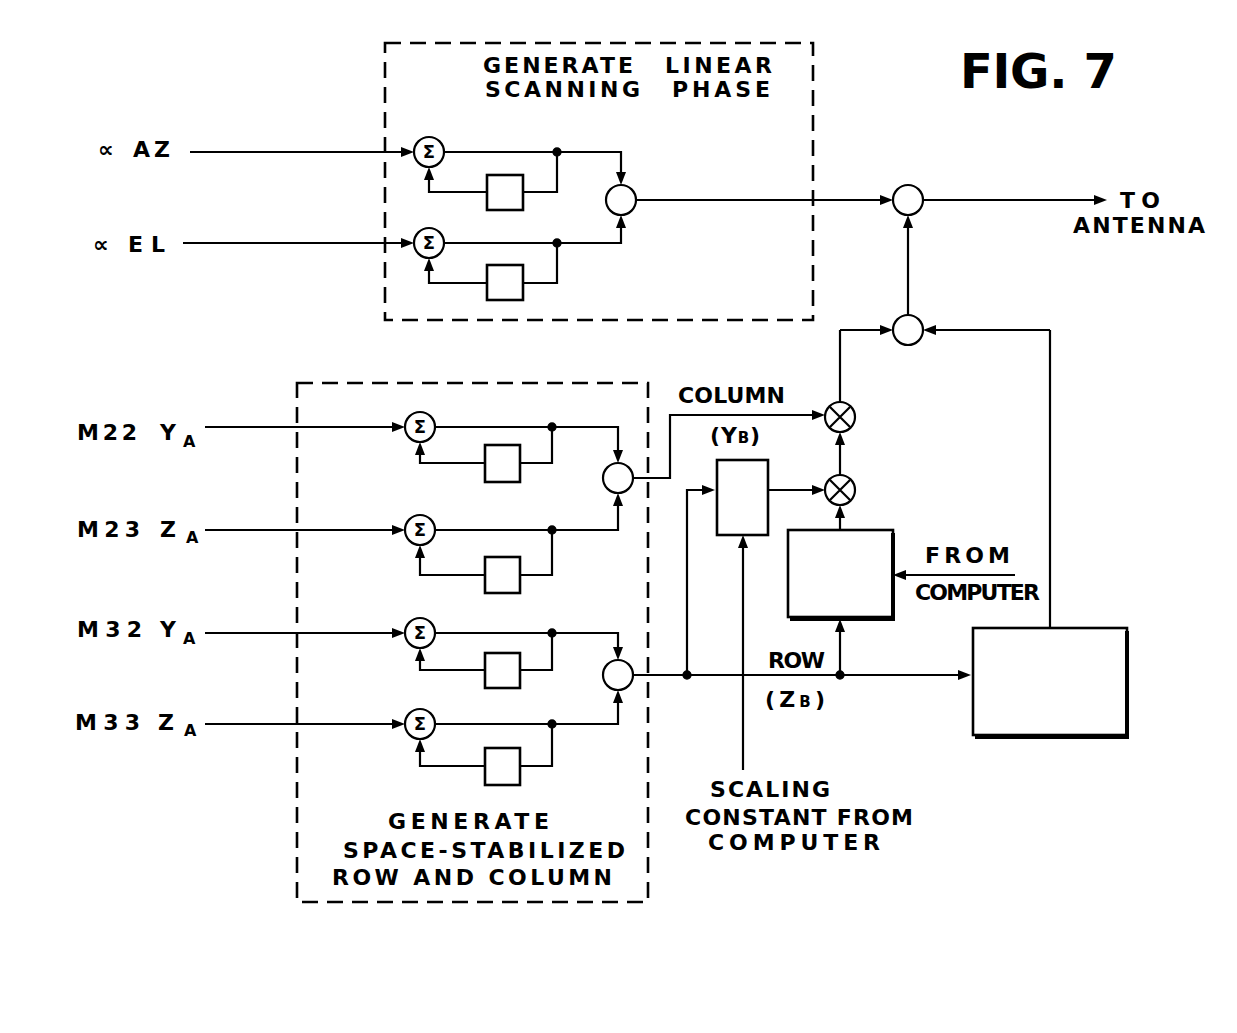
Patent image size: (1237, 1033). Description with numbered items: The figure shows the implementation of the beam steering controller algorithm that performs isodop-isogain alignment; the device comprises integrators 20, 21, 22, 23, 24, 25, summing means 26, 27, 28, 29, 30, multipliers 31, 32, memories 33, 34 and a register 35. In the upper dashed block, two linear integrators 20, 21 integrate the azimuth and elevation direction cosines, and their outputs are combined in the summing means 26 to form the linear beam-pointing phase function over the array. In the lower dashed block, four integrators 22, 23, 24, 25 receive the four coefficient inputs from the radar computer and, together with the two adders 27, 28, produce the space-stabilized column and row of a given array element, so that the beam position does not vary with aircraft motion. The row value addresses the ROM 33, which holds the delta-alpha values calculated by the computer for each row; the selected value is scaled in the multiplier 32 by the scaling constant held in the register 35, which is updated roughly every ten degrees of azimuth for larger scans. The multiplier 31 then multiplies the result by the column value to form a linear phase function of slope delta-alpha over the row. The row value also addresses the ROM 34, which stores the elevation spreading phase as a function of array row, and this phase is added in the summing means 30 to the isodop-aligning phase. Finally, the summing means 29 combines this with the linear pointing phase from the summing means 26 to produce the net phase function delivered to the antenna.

The linear integrator 20 is at (523, 205).
The linear integrator 21 is at (523, 296).
The integrator 22 is at (520, 478).
The integrator 23 is at (520, 590).
The integrator 24 is at (520, 685).
The integrator 25 is at (520, 782).
The summing means 26 is at (634, 194).
The adder 27 is at (630, 491).
The adder 28 is at (630, 688).
The summing means 29 is at (919, 190).
The summing means 30 is at (918, 342).
The multiplier 31 is at (855, 417).
The multiplier 32 is at (855, 492).
The delta-alpha ROM 33 is at (880, 530).
The elevation spreading ROM 34 is at (1078, 628).
The register 35 is at (730, 535).